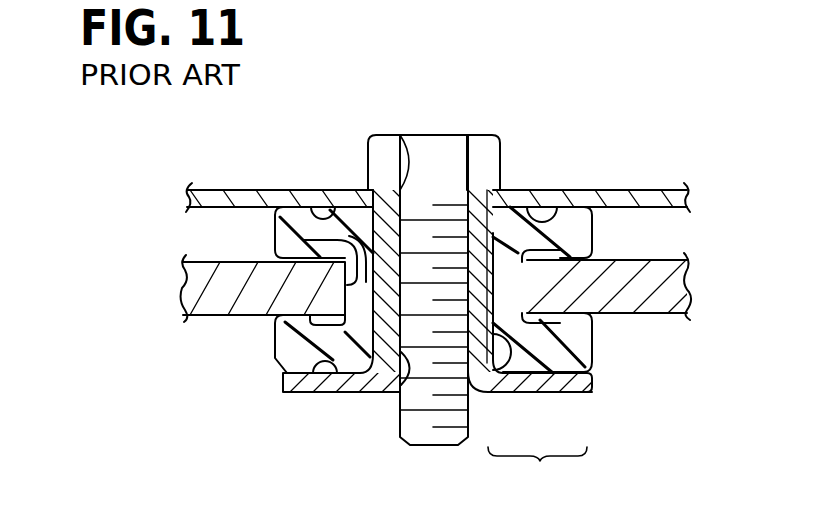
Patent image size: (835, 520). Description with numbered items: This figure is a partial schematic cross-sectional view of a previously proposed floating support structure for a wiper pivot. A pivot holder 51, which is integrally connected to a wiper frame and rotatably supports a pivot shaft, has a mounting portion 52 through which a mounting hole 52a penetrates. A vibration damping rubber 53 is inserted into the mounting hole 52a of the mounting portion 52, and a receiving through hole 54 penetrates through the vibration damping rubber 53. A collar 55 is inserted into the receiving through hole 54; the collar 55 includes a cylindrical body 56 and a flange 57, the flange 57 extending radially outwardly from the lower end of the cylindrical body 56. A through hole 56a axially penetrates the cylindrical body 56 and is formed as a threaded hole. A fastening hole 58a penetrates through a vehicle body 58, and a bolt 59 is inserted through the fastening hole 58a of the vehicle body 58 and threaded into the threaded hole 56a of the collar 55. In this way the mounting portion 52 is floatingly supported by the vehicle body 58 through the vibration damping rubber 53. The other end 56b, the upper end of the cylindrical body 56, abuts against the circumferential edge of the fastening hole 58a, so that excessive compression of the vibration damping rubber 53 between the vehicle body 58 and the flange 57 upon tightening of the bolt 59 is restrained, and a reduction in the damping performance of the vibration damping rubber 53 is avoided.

The pivot holder 51 is at (678, 324).
The mounting portion 52 is at (235, 320).
The mounting hole 52a is at (303, 240).
The vibration damping rubber 53 is at (367, 334).
The receiving through hole 54 is at (490, 232).
The collar 55 is at (537, 472).
The cylindrical body 56 is at (505, 382).
The through hole 56a is at (403, 357).
The other end 56b is at (487, 190).
The flange 57 is at (572, 383).
The vehicle body 58 is at (636, 190).
The fastening hole 58a is at (405, 135).
The bolt 59 is at (368, 158).